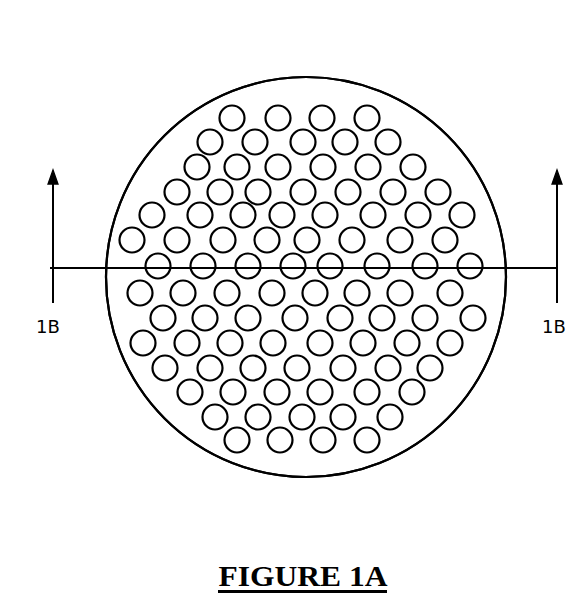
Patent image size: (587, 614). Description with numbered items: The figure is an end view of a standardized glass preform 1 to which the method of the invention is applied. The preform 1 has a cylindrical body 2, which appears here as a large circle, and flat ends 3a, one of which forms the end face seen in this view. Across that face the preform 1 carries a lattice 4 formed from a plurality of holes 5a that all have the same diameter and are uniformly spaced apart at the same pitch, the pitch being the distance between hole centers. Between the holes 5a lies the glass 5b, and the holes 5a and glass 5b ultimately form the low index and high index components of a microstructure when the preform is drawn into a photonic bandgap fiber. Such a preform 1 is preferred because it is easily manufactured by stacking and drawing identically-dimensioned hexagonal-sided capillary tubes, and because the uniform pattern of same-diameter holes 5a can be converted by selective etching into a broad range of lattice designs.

The standardized glass preform 1 is at (80, 68).
The cylindrical body 2 is at (140, 393).
The flat end 3a is at (420, 140).
The lattice 4 is at (287, 234).
The holes 5a is at (232, 186).
The glass between the holes 5b is at (370, 143).